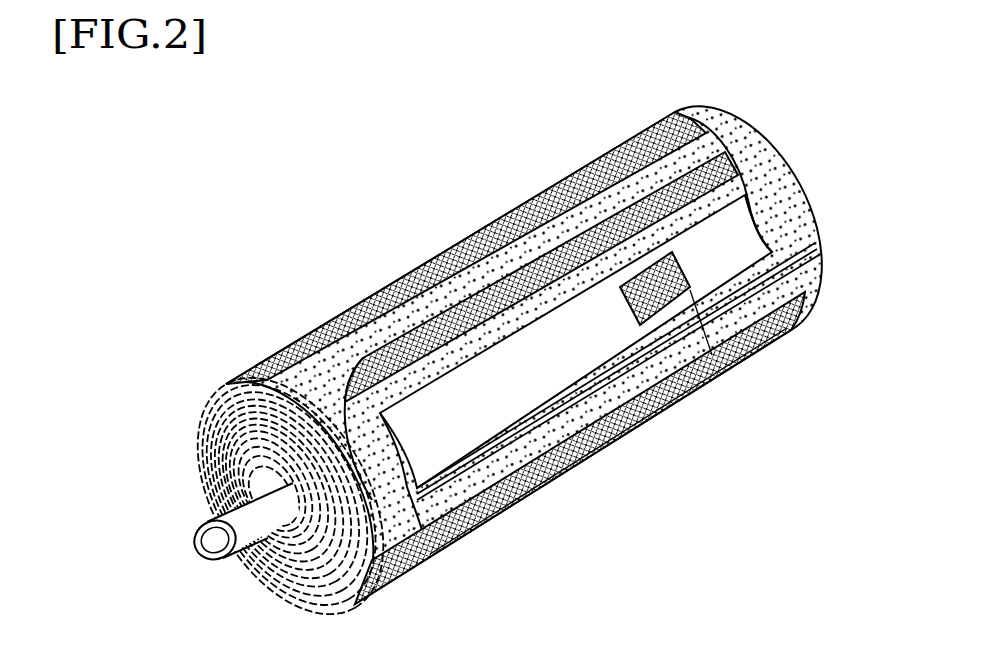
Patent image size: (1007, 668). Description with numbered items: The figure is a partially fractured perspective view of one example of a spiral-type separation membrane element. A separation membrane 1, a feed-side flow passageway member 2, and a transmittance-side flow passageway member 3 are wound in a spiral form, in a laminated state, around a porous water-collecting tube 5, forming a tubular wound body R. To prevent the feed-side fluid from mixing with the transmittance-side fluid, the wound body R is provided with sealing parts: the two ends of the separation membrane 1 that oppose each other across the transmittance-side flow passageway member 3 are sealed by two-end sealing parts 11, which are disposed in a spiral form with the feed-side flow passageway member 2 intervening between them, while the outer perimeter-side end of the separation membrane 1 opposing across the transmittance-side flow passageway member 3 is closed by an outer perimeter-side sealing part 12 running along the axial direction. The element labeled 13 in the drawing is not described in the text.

The separation membrane 1 is at (393, 291).
The feed-side flow passageway member 2 is at (335, 323).
The transmittance-side flow passageway member 3 is at (717, 358).
The porous water-collecting tube 5 is at (243, 533).
The two-end sealing parts 11 is at (803, 217).
The outer perimeter-side sealing part 12 is at (518, 229).
The wound electrode body 13 is at (213, 473).
The tubular wound body R is at (498, 383).